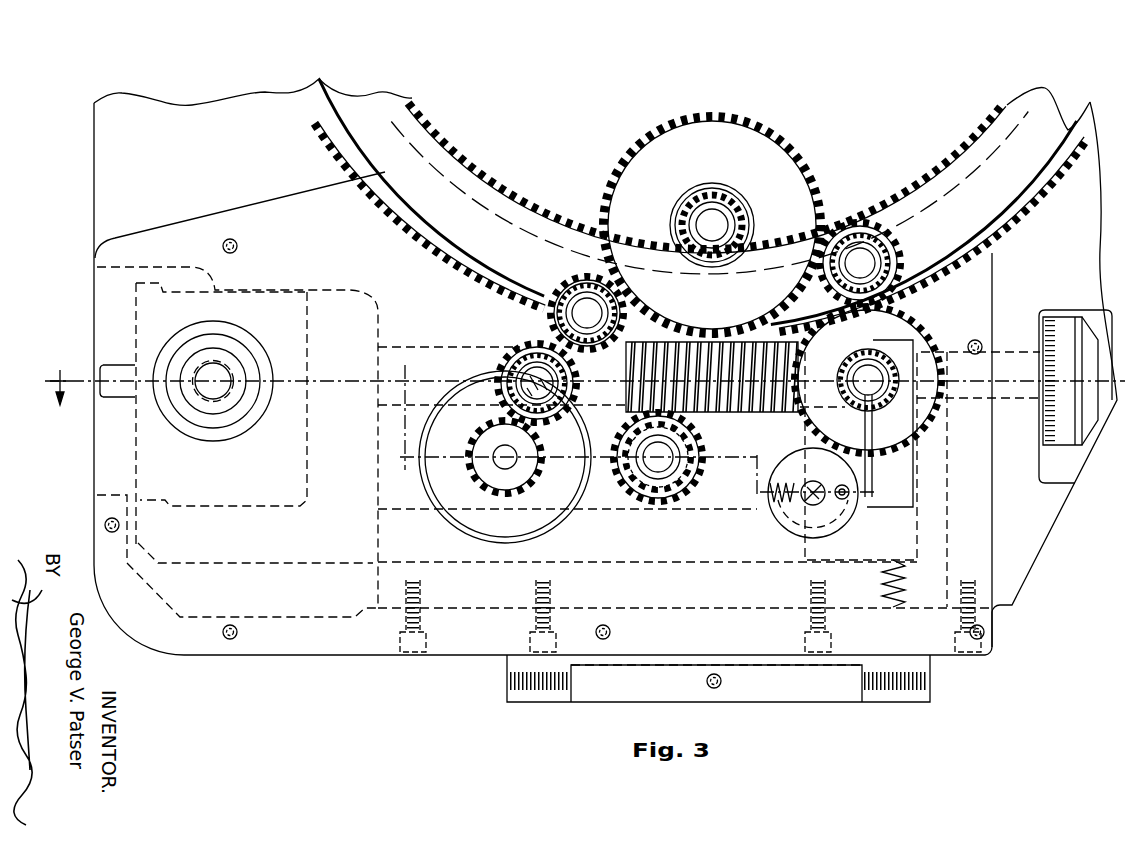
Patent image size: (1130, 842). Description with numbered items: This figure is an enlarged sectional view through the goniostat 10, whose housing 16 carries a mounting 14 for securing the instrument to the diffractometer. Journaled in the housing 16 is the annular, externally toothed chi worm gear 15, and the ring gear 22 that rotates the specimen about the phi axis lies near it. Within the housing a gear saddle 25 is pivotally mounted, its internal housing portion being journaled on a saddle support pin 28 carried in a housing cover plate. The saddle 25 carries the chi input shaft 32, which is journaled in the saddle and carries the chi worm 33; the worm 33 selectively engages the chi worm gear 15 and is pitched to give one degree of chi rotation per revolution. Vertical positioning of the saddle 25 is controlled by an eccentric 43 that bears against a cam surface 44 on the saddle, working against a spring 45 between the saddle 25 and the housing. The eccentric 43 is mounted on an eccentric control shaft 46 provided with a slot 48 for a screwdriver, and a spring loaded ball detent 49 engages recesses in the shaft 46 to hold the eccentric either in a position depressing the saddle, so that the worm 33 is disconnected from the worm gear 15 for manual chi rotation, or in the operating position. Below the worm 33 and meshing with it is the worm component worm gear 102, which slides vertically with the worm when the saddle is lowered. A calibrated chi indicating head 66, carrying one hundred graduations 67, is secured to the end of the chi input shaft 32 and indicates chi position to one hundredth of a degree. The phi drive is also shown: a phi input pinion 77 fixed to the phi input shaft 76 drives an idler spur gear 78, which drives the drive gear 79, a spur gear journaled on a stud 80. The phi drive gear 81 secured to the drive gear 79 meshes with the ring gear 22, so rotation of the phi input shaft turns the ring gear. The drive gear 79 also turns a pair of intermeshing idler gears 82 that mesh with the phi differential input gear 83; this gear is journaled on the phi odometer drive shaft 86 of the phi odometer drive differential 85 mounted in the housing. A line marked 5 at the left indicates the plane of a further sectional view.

The goniostat 10 is at (93, 211).
The housing 16 is at (110, 105).
The chi worm gear 15 is at (385, 110).
The ring gear 22 is at (922, 180).
The drive gear 79 is at (607, 168).
The phi drive gear 81 is at (728, 200).
The stud 80 is at (735, 215).
The idler spur gear 78 is at (848, 228).
The idler gears 82 is at (527, 345).
The chi input shaft 32 is at (105, 358).
The section line 5 is at (57, 402).
The saddle support pin 28 is at (205, 382).
The phi odometer drive differential 85 is at (505, 540).
The phi differential input gear 83 is at (490, 440).
The phi odometer drive shaft 86 is at (498, 460).
The chi worm 33 is at (720, 415).
The worm component worm gear 102 is at (700, 489).
The phi input shaft 76 is at (840, 378).
The phi input pinion 77 is at (895, 360).
The eccentric 43 is at (805, 447).
The cam surface 44 is at (834, 525).
The slot 48 is at (812, 480).
The eccentric control shaft 46 is at (850, 490).
The spring loaded ball detent 49 is at (787, 520).
The spring 45 is at (915, 575).
The graduations 67 is at (1055, 350).
The calibrated chi indicating head 66 is at (1065, 440).
The mounting 14 is at (760, 700).
The gear saddle 25 is at (649, 562).